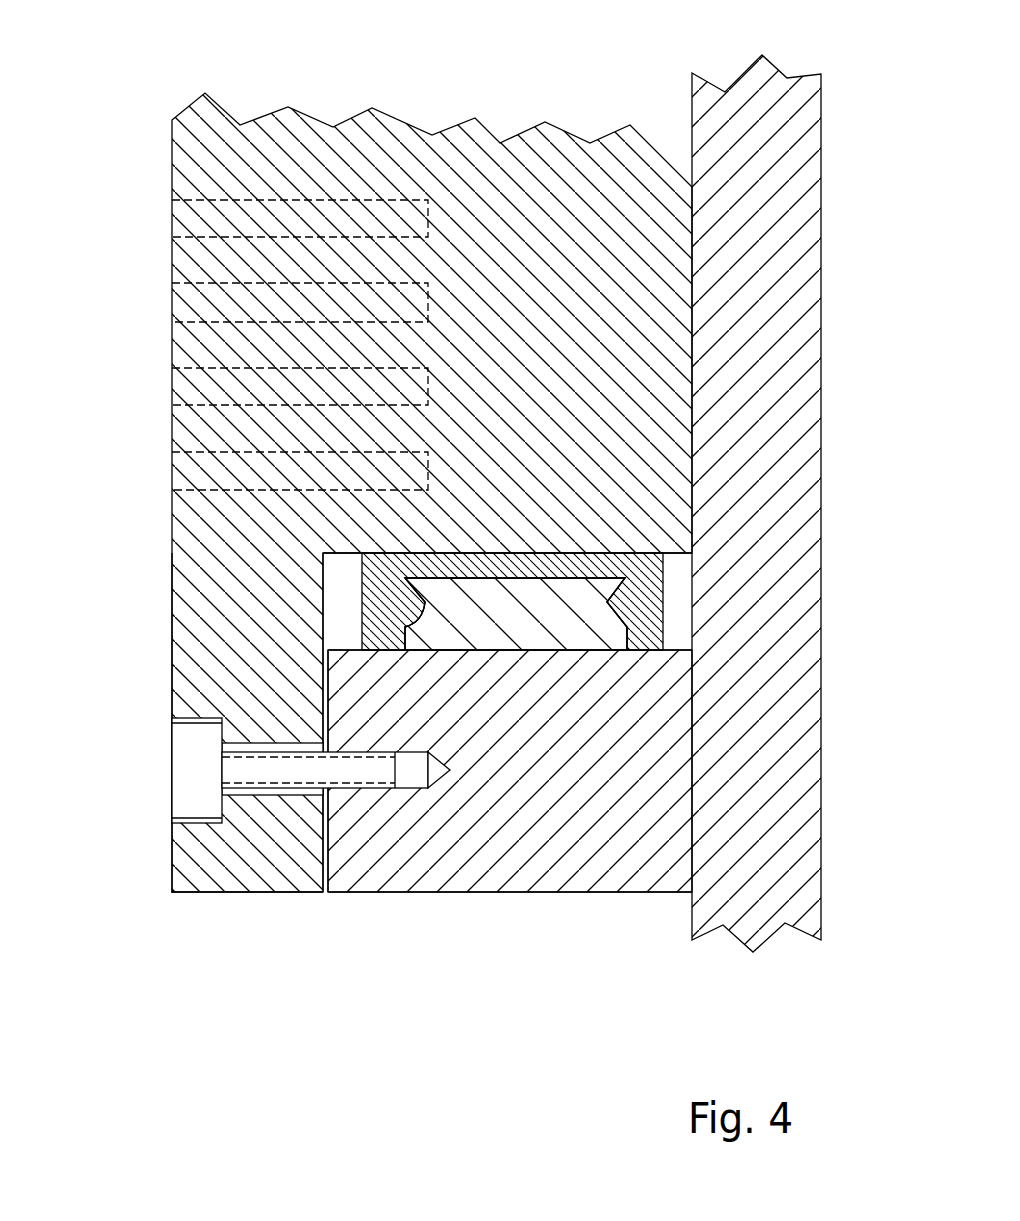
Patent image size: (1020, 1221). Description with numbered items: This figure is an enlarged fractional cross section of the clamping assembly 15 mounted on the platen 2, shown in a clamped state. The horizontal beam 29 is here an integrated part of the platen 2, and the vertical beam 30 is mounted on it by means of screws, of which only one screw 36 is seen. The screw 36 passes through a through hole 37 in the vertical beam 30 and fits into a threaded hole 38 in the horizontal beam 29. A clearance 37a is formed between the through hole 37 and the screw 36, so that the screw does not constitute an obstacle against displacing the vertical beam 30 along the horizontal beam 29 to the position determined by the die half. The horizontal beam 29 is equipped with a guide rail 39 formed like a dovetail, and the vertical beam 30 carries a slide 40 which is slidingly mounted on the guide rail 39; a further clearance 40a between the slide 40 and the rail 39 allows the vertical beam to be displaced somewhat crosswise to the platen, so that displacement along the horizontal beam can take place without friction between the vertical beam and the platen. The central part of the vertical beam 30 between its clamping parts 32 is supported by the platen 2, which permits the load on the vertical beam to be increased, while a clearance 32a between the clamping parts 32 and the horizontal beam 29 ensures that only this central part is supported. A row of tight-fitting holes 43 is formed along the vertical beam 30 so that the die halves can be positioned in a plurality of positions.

The clamping assembly 15 is at (133, 87).
The platen 2 is at (760, 175).
The tight-fitting holes 43 is at (183, 215).
The vertical beam 30 is at (172, 520).
The slide 40 is at (662, 578).
The clearance 40a is at (425, 603).
The guide rail 39 is at (613, 635).
The threaded hole 38 is at (417, 768).
The screw 36 is at (188, 772).
The through hole 37 is at (253, 785).
The clearance 37a is at (270, 792).
The clamping part 32 is at (202, 875).
The clearance 32a is at (327, 888).
The horizontal beam 29 is at (600, 878).